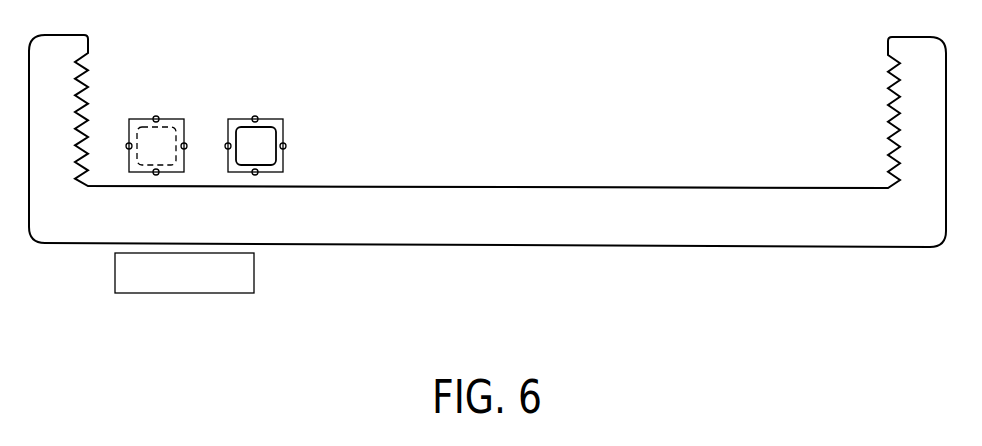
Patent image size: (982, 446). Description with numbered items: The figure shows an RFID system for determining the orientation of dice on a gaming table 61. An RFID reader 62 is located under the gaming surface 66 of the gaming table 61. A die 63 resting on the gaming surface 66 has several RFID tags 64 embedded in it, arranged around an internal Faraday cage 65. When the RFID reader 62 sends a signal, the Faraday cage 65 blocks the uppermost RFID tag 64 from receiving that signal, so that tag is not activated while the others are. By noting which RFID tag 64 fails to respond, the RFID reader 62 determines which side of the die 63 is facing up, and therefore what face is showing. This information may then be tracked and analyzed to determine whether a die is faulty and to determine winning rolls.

The gaming table 61 is at (488, 245).
The RFID reader 62 is at (183, 293).
The die 63 is at (254, 108).
The RFID tags 64 is at (227, 143).
The internal Faraday cage 65 is at (273, 160).
The gaming surface 66 is at (488, 187).